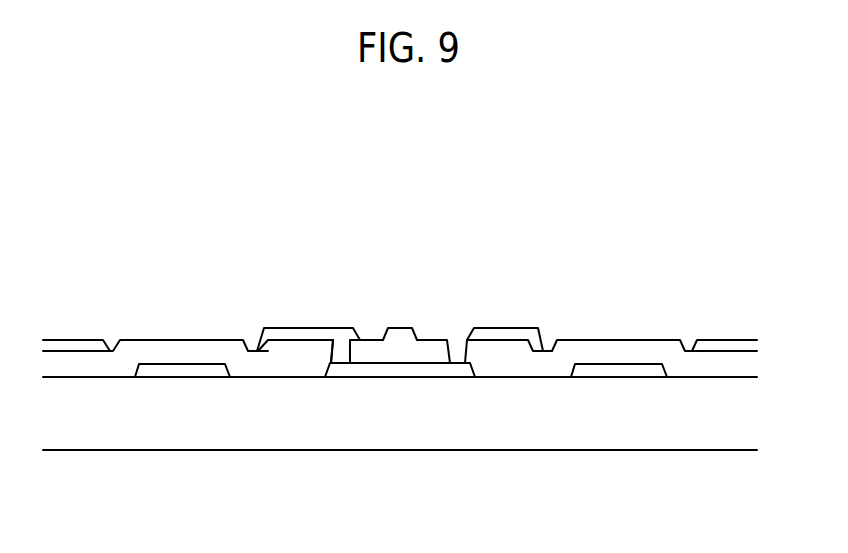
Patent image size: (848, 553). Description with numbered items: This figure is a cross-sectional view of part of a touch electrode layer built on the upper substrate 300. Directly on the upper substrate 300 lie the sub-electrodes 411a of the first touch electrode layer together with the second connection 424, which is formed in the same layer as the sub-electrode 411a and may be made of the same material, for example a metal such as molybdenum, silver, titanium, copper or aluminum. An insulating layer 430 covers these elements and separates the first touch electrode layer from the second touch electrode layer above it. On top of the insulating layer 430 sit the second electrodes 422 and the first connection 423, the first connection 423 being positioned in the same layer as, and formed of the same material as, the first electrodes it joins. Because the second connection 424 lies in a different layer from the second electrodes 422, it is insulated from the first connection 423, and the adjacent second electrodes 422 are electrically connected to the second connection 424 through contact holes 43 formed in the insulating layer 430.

The upper substrate 300 is at (277, 422).
The sub-electrode 411a is at (175, 371).
The insulating layer 430 is at (523, 360).
The second connection 424 is at (405, 371).
The second electrode 422 is at (73, 347).
The first connection 423 is at (399, 336).
The contact hole 43 is at (333, 352).